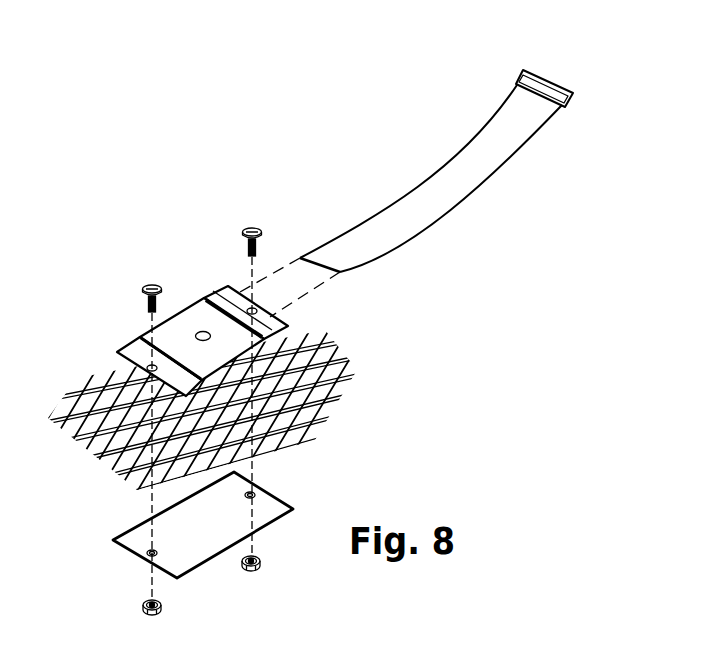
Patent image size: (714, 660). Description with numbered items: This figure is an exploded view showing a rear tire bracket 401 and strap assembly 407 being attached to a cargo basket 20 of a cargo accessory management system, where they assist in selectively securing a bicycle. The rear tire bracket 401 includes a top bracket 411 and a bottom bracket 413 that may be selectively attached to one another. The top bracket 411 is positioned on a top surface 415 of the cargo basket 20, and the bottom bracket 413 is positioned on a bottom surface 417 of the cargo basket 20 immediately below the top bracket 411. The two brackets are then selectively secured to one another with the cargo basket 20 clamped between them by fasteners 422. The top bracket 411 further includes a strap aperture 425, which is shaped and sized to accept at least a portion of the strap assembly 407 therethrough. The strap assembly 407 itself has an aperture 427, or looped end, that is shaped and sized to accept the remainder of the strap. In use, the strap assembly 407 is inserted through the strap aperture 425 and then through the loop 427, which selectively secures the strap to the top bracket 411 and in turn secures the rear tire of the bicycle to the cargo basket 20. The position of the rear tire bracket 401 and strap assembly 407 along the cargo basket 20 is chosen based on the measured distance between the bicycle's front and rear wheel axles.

The cargo basket 20 is at (342, 392).
The rear tire bracket 401 is at (174, 285).
The strap assembly 407 is at (418, 214).
The top bracket 411 is at (135, 342).
The bottom bracket 413 is at (273, 506).
The top surface 415 is at (345, 306).
The bottom surface 417 is at (101, 508).
The fasteners 422 is at (150, 286).
The strap aperture 425 is at (254, 297).
The aperture (loop) 427 is at (562, 80).